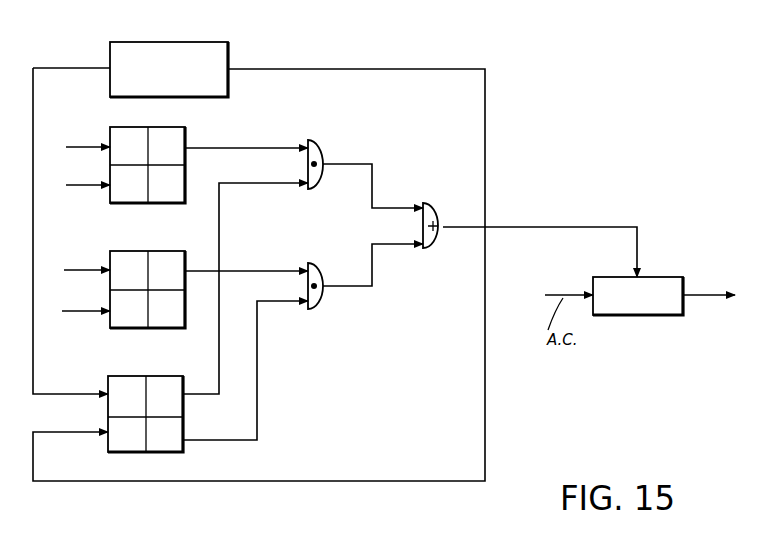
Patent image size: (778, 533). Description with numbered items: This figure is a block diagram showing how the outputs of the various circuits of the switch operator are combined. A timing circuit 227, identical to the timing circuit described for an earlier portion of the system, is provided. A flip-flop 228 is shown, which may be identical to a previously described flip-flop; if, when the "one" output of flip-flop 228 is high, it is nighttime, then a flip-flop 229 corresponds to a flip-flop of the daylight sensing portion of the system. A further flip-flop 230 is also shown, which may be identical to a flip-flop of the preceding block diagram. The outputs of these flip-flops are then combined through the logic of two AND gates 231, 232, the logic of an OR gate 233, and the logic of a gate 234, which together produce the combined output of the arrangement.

The timing circuit 227 is at (175, 42).
The flip-flop 228 is at (122, 376).
The flip-flop 229 is at (118, 127).
The flip-flop 230 is at (128, 251).
The AND gate 231 is at (318, 146).
The AND gate 232 is at (321, 304).
The OR gate 233 is at (443, 188).
The gate 234 is at (665, 277).